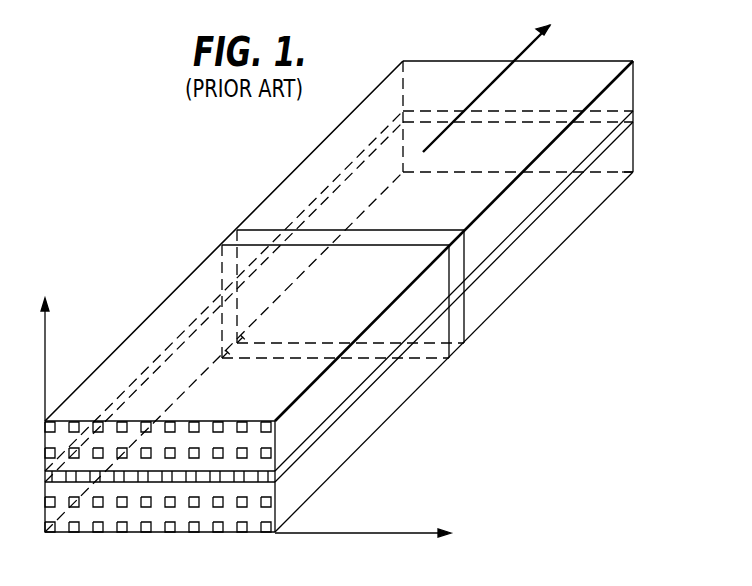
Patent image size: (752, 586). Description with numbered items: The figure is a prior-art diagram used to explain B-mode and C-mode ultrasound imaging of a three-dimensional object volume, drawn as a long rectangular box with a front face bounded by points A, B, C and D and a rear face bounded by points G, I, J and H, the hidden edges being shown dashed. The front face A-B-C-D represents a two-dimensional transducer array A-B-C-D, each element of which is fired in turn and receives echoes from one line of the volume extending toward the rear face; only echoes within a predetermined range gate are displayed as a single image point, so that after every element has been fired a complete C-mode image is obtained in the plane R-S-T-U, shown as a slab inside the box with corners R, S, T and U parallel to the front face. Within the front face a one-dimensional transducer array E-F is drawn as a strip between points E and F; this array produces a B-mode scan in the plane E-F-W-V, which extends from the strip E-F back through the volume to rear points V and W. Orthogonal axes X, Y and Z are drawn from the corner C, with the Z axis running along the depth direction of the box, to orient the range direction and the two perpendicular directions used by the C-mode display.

The corner of two-dimensional transducer array A is at (148, 415).
The corner of two-dimensional transducer array B is at (282, 476).
The corner of two-dimensional transducer array C is at (153, 489).
The corner of two-dimensional transducer array D is at (452, 365).
The end of one-dimensional transducer array E is at (148, 472).
The end of one-dimensional transducer array F is at (454, 308).
The rear corner of object volume G is at (339, 227).
The rear corner of object volume H is at (518, 116).
The rear corner of object volume I is at (457, 227).
The rear corner of object volume J is at (635, 177).
The rear corner of B-mode scan plane V is at (339, 281).
The rear corner of B-mode scan plane W is at (349, 289).
The corner of C-mode image plane R is at (324, 304).
The corner of C-mode image plane S is at (333, 237).
The corner of C-mode image plane T is at (467, 292).
The corner of C-mode image plane U is at (355, 302).
The X axis X is at (372, 534).
The Y axis Y is at (45, 346).
The Z axis Z is at (304, 266).